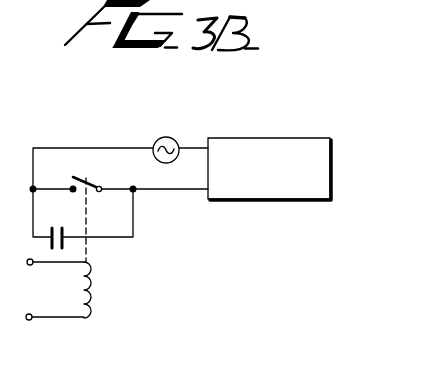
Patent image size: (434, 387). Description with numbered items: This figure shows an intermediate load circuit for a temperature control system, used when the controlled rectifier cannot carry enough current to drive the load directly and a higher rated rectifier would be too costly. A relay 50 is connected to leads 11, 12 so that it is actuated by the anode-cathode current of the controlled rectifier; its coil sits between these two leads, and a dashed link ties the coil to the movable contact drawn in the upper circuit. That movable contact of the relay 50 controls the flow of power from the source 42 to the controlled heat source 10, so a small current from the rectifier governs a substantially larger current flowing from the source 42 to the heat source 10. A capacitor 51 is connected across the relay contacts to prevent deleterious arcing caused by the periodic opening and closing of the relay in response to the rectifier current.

The controlled heat source 10 is at (270, 137).
The source 42 is at (170, 137).
The relay 50 is at (92, 247).
The capacitor 51 is at (52, 253).
The lead 11 is at (58, 264).
The lead 12 is at (37, 320).